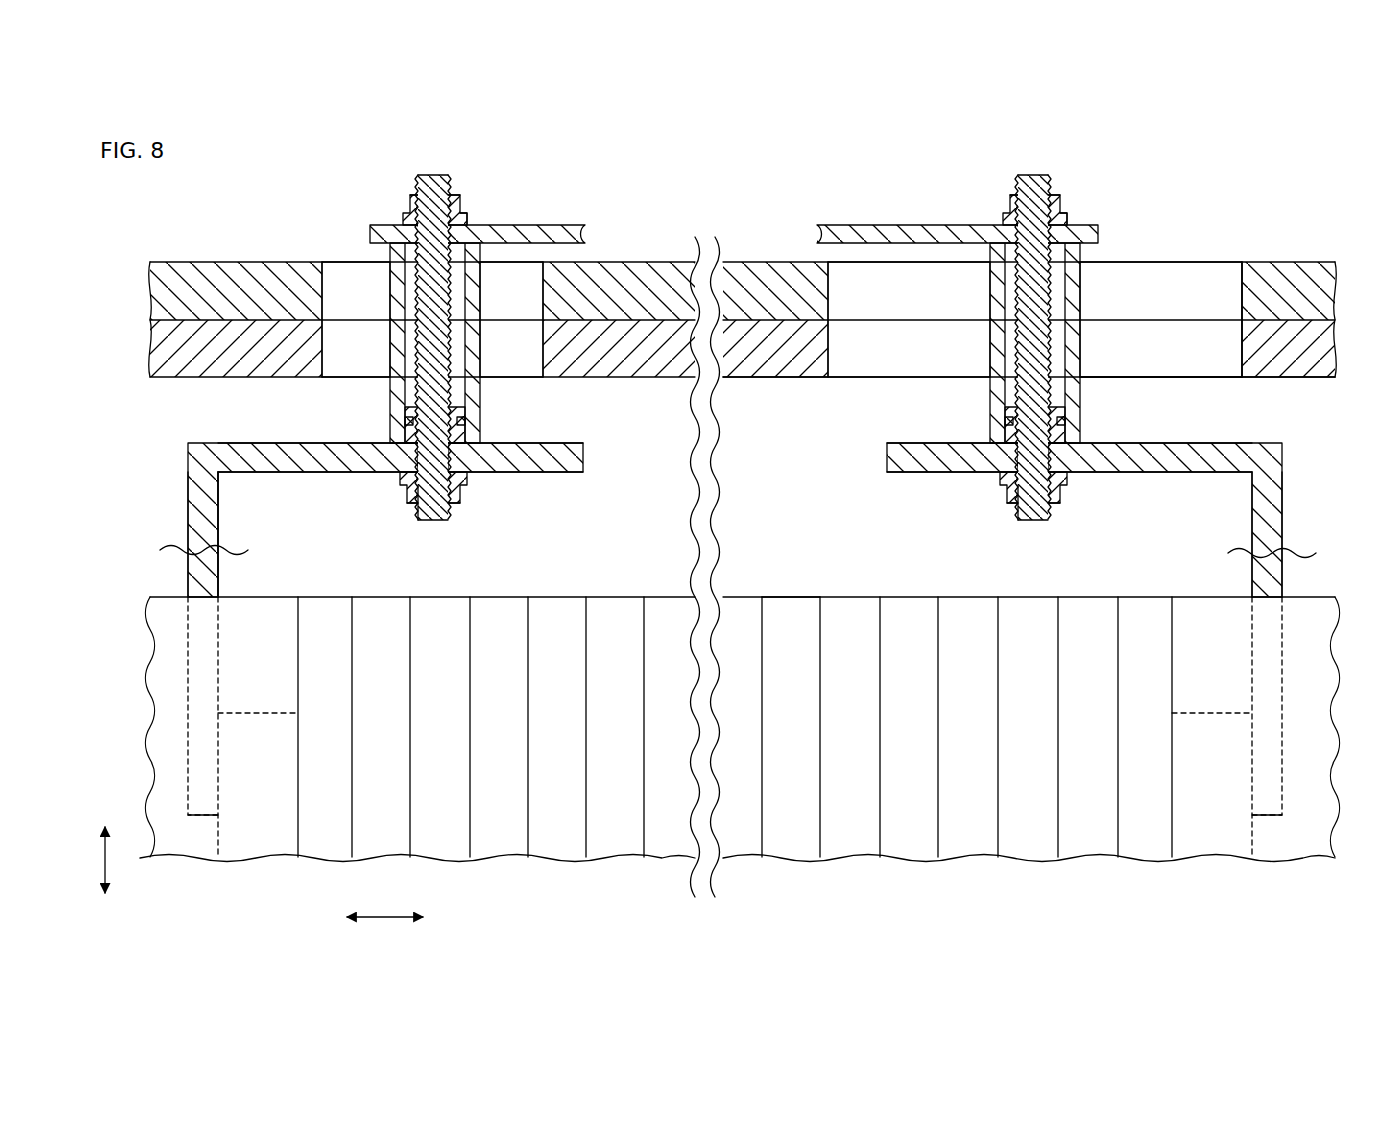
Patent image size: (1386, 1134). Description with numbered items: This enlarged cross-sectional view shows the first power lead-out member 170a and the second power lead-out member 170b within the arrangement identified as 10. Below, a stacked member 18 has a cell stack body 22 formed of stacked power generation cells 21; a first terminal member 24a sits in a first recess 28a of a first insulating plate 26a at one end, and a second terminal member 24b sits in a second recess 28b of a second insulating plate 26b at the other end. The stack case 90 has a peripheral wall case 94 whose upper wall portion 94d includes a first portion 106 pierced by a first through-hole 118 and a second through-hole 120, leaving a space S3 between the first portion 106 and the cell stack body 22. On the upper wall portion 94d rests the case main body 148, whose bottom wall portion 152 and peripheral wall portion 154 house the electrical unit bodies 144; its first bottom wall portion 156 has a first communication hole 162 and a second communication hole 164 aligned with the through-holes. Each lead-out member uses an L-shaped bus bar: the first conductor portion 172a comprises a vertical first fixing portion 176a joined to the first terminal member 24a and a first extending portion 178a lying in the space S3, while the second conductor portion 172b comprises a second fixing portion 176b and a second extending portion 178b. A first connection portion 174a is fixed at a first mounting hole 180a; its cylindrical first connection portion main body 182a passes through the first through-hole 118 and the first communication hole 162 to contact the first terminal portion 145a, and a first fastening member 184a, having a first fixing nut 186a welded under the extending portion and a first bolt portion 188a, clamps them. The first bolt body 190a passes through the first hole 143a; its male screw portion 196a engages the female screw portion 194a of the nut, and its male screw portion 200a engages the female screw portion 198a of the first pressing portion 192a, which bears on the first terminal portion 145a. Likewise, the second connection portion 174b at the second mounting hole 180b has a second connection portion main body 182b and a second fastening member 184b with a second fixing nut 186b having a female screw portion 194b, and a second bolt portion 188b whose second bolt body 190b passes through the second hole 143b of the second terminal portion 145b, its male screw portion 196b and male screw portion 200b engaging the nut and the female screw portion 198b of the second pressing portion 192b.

The structure 10 is at (1316, 172).
The stacked member 18 is at (712, 697).
The power generation cells 21 is at (588, 600).
The cell stack body 22 is at (790, 594).
The first terminal member 24a is at (256, 713).
The second terminal member 24b is at (1208, 713).
The first insulating plate 26a is at (160, 675).
The second insulating plate 26b is at (1297, 843).
The first recess 28a is at (218, 835).
The second recess 28b is at (1252, 835).
The stack case 90 is at (1313, 424).
The peripheral wall case 94 is at (767, 328).
The upper wall portion 94d is at (764, 372).
The first portion 106 is at (816, 372).
The first through-hole 118 is at (345, 378).
The second through-hole 120 is at (1210, 375).
The first hole 143a is at (452, 246).
The second hole 143b is at (1085, 240).
The electrical unit bodies 144 is at (734, 223).
The first terminal portion 145a is at (553, 230).
The second terminal portion 145b is at (883, 236).
The case main body 148 is at (1331, 250).
The bottom wall portion 152 is at (762, 290).
The peripheral wall portion 154 is at (1280, 270).
The first bottom wall portion 156 is at (250, 280).
The first communication hole 162 is at (345, 270).
The second communication hole 164 is at (1212, 285).
The first power lead-out member 170a is at (423, 504).
The second power lead-out member 170b is at (1037, 504).
The first conductor portion 172a is at (385, 520).
The second conductor portion 172b is at (1084, 520).
The first connection portion 174a is at (525, 413).
The second connection portion 174b is at (975, 408).
The first fixing portion 176a is at (220, 524).
The second fixing portion 176b is at (1252, 523).
The first extending portion 178a is at (255, 545).
The second extending portion 178b is at (1222, 545).
The first mounting hole 180a is at (440, 462).
The second mounting hole 180b is at (1018, 462).
The first connection portion main body 182a is at (403, 421).
The second connection portion main body 182b is at (995, 422).
The first fastening member 184a is at (425, 342).
The second fastening member 184b is at (1027, 342).
The first fixing nut 186a is at (462, 503).
The second fixing nut 186b is at (1013, 503).
The first bolt portion 188a is at (353, 186).
The second bolt portion 188b is at (957, 185).
The first bolt body 190a is at (432, 177).
The second bolt body 190b is at (1030, 176).
The first pressing portion 192a is at (403, 213).
The second pressing portion 192b is at (1003, 213).
The female screw portion 194a is at (445, 500).
The female screw portion 194b is at (1040, 500).
The male screw portion 196a is at (460, 492).
The male screw portion 196b is at (1015, 492).
The female screw portion 198a is at (438, 225).
The female screw portion 198b is at (1038, 225).
The male screw portion 200a is at (450, 203).
The male screw portion 200b is at (1050, 201).
The space S3 is at (250, 578).